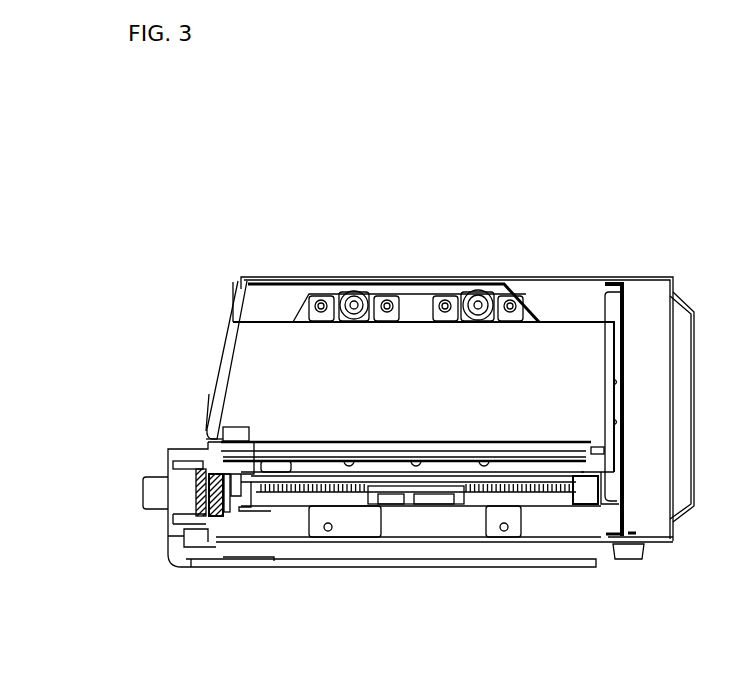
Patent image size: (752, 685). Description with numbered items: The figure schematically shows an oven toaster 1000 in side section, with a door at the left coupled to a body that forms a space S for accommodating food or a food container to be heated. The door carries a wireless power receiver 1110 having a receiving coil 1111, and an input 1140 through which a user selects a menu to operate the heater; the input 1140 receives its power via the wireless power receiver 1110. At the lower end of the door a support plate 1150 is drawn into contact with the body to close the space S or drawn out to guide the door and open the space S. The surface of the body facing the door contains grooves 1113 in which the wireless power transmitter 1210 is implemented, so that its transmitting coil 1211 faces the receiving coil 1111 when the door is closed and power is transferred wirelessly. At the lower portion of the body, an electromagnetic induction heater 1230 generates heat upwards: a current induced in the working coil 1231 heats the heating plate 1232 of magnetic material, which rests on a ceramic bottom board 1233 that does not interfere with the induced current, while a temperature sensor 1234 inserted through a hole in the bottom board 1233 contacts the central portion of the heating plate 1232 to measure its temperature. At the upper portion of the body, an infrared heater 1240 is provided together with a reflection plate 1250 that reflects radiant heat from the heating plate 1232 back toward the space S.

The oven toaster 1000 is at (236, 155).
The wireless power receiver 1110 is at (185, 464).
The receiving coil 1111 is at (201, 468).
The grooves 1113 is at (212, 517).
The input 1140 is at (141, 492).
The support plate 1150 is at (342, 565).
The wireless power transmitter 1210 is at (223, 514).
The transmitting coil 1211 is at (219, 518).
The electromagnetic induction heater 1230 is at (598, 623).
The working coil 1231 is at (486, 492).
The heating plate 1232 is at (543, 477).
The bottom board 1233 is at (582, 477).
The temperature sensor 1234 is at (412, 473).
The infrared heater 1240 is at (478, 290).
The reflection plate 1250 is at (412, 297).
The space S is at (563, 353).